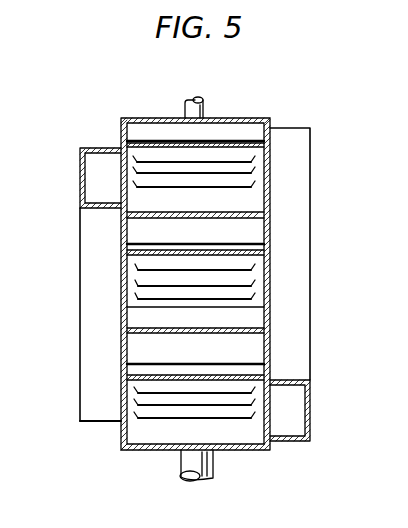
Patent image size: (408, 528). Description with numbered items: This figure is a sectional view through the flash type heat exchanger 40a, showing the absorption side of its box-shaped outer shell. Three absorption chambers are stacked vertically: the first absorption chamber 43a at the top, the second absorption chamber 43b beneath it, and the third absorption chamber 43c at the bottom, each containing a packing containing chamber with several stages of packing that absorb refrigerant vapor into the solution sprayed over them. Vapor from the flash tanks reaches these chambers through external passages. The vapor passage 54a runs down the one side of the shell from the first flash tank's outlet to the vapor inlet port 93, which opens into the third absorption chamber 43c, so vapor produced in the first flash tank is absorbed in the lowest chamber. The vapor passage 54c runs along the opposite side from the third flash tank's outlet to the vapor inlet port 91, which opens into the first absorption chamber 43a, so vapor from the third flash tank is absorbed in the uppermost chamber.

The flash type heat exchanger 40a is at (238, 102).
The vapor inlet port 91 is at (123, 172).
The vapor inlet port 93 is at (268, 404).
The first absorption chamber 43a is at (258, 185).
The second absorption chamber 43b is at (133, 286).
The third absorption chamber 43c is at (129, 432).
The vapor passage 54a is at (305, 272).
The vapor passage 54c is at (95, 345).